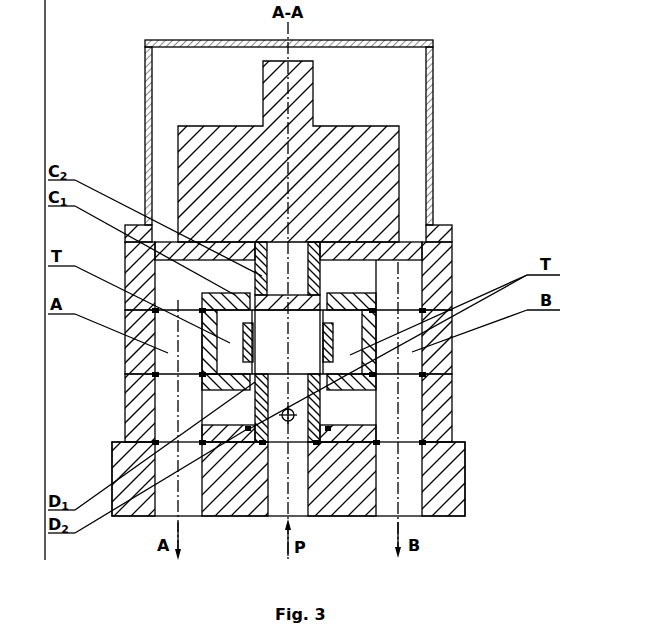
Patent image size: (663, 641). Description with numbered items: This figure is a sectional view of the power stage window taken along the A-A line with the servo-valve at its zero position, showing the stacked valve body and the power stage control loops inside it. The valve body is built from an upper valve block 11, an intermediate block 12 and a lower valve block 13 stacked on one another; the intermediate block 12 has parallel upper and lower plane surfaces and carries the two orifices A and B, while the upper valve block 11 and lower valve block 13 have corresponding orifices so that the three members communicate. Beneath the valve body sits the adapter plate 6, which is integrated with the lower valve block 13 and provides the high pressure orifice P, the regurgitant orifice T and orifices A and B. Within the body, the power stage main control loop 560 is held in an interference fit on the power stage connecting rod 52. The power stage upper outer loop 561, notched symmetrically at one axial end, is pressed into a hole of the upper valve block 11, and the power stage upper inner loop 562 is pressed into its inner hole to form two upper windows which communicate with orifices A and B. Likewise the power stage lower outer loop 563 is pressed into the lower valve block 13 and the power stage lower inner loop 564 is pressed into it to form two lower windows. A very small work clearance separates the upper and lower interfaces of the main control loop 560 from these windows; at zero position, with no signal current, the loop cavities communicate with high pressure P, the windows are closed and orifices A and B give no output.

The adapter plate 6 is at (120, 455).
The upper valve block 11 is at (322, 312).
The intermediate block 12 is at (447, 358).
The lower valve block 13 is at (440, 424).
The power stage connecting rod 52 is at (334, 344).
The power stage main control loop 560 is at (332, 325).
The power stage upper outer loop 561 is at (318, 248).
The power stage upper inner loop 562 is at (300, 290).
The power stage lower outer loop 563 is at (320, 430).
The power stage lower inner loop 564 is at (322, 408).